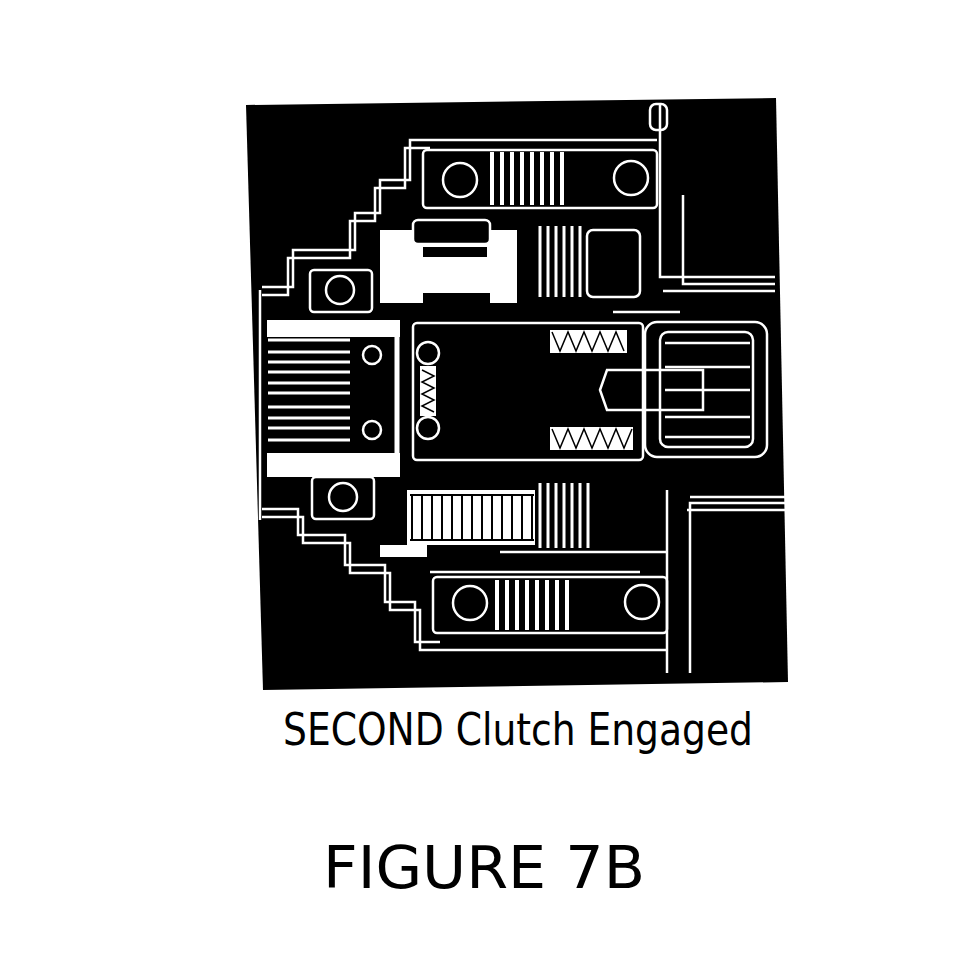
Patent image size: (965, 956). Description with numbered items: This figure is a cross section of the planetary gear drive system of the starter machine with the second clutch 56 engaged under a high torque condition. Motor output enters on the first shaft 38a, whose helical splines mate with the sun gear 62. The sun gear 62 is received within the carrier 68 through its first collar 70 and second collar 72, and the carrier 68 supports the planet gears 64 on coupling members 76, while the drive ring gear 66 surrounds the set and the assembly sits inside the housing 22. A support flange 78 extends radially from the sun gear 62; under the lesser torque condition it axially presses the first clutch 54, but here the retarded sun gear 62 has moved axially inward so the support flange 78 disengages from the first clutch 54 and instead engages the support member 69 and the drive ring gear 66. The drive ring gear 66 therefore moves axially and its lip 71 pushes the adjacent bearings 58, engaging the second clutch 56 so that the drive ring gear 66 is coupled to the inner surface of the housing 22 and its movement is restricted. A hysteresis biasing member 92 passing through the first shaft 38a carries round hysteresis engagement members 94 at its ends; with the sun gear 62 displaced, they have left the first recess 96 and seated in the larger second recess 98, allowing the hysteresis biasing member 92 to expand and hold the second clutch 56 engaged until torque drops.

The housing 22 is at (432, 104).
The first shaft 38a is at (751, 379).
The first clutch 54 is at (587, 217).
The second clutch 56 is at (527, 163).
The bearings 58 is at (650, 602).
The sun gear 62 is at (653, 387).
The planet gears 64 is at (250, 217).
The drive ring gear 66 is at (773, 130).
The carrier 68 is at (257, 572).
The support member 69 is at (617, 511).
The first collar 70 is at (700, 486).
The lip 71 is at (257, 628).
The second collar 72 is at (306, 395).
The coupling members 76 is at (395, 262).
The support flange 78 is at (775, 181).
The hysteresis biasing member 92 is at (298, 444).
The hysteresis engagement members 94 is at (283, 509).
The first recess 96 is at (276, 419).
The second recess 98 is at (247, 396).